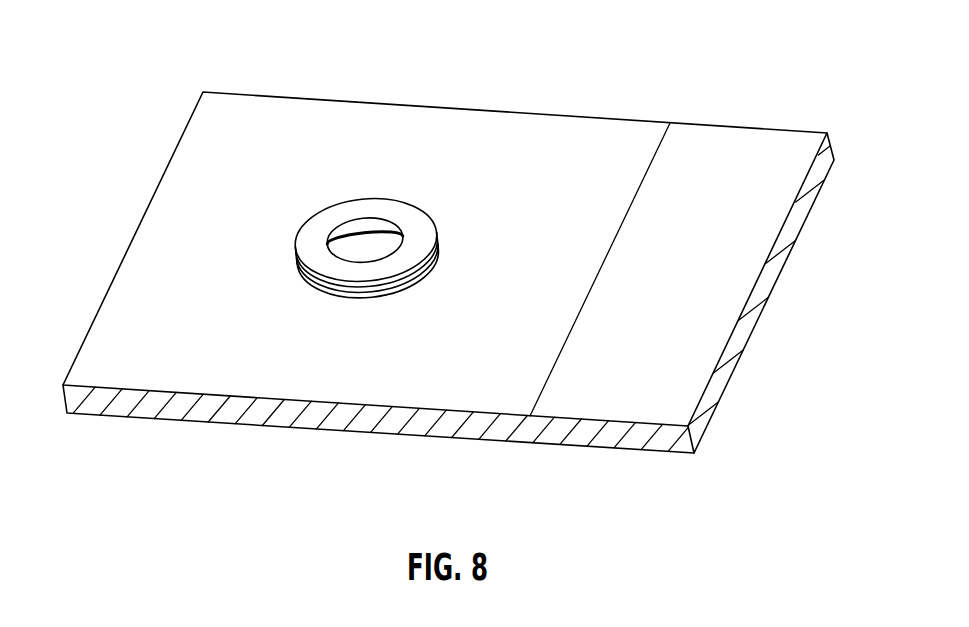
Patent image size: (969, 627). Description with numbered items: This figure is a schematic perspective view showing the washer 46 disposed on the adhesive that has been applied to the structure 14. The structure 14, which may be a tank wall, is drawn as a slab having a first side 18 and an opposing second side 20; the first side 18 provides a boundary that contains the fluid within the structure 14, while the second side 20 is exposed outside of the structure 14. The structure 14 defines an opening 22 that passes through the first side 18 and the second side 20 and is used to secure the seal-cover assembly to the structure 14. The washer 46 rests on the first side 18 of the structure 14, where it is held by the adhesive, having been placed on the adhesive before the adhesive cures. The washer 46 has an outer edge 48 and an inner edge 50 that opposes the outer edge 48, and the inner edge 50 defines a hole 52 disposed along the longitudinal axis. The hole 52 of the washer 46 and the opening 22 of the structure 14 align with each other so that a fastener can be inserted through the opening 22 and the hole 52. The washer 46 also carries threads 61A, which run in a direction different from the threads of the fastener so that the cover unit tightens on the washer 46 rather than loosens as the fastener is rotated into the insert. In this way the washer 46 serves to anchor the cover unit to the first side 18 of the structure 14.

The structure 14 is at (772, 282).
The first side 18 is at (543, 128).
The second side 20 is at (620, 453).
The opening 22 is at (363, 250).
The washer 46 is at (417, 228).
The outer edge 48 is at (437, 250).
The inner edge 50 is at (336, 230).
The hole 52 is at (355, 227).
The threads 61A is at (365, 290).